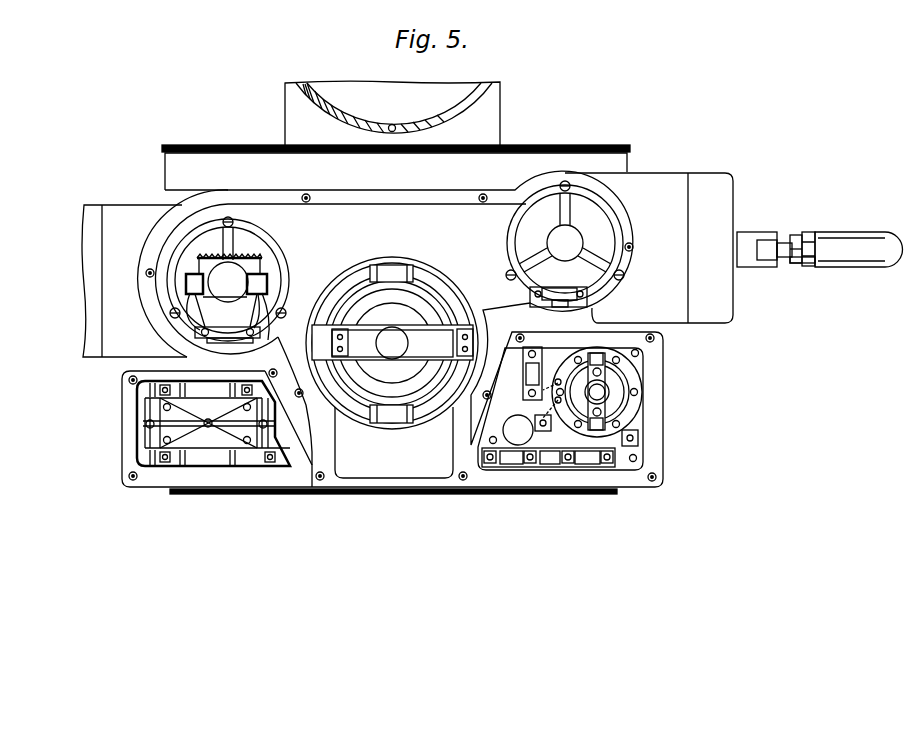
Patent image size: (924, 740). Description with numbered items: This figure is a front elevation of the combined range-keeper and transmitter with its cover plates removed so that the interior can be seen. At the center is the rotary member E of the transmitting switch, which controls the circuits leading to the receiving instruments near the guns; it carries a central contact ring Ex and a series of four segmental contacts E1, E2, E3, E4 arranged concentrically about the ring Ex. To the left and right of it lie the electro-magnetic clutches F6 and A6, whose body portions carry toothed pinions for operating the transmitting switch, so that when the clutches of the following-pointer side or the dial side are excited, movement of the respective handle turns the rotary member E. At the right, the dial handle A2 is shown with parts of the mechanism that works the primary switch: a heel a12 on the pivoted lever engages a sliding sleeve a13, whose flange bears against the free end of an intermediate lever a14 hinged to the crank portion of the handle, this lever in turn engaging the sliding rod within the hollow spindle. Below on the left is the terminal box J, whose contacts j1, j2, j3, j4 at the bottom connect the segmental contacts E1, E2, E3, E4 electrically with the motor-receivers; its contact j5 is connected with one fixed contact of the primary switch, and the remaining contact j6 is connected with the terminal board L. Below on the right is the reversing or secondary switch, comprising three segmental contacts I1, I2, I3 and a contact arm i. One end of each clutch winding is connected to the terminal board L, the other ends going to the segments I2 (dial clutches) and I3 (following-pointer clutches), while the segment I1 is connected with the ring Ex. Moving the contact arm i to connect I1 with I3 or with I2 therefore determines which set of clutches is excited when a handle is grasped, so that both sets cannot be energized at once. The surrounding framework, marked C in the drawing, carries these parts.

The casing C is at (407, 287).
The electro-magnetic clutch F6 is at (248, 257).
The contact j3 is at (242, 369).
The segmental contact E1 is at (358, 280).
The segmental contact E4 is at (443, 298).
The central contact ring Ex is at (407, 290).
The segmental contact E3 is at (430, 404).
The segmental contact E2 is at (353, 402).
The rotary member of the transmitting switch E is at (392, 343).
The electro-magnetic clutch A6 is at (565, 244).
The intermediate lever a14 is at (795, 235).
The sliding sleeve a13 is at (813, 238).
The heel a12 is at (804, 263).
The dial handle A2 is at (877, 252).
The terminal box J is at (210, 462).
The contact j1 is at (148, 388).
The contact j5 is at (150, 424).
The contact j4 is at (267, 462).
The contact j2 is at (155, 462).
The contact j6 is at (297, 462).
The terminal board L is at (553, 457).
The segmental contact I1 is at (632, 404).
The contact arm i is at (610, 383).
The segmental contact I3 is at (569, 370).
The segmental contact I2 is at (527, 467).